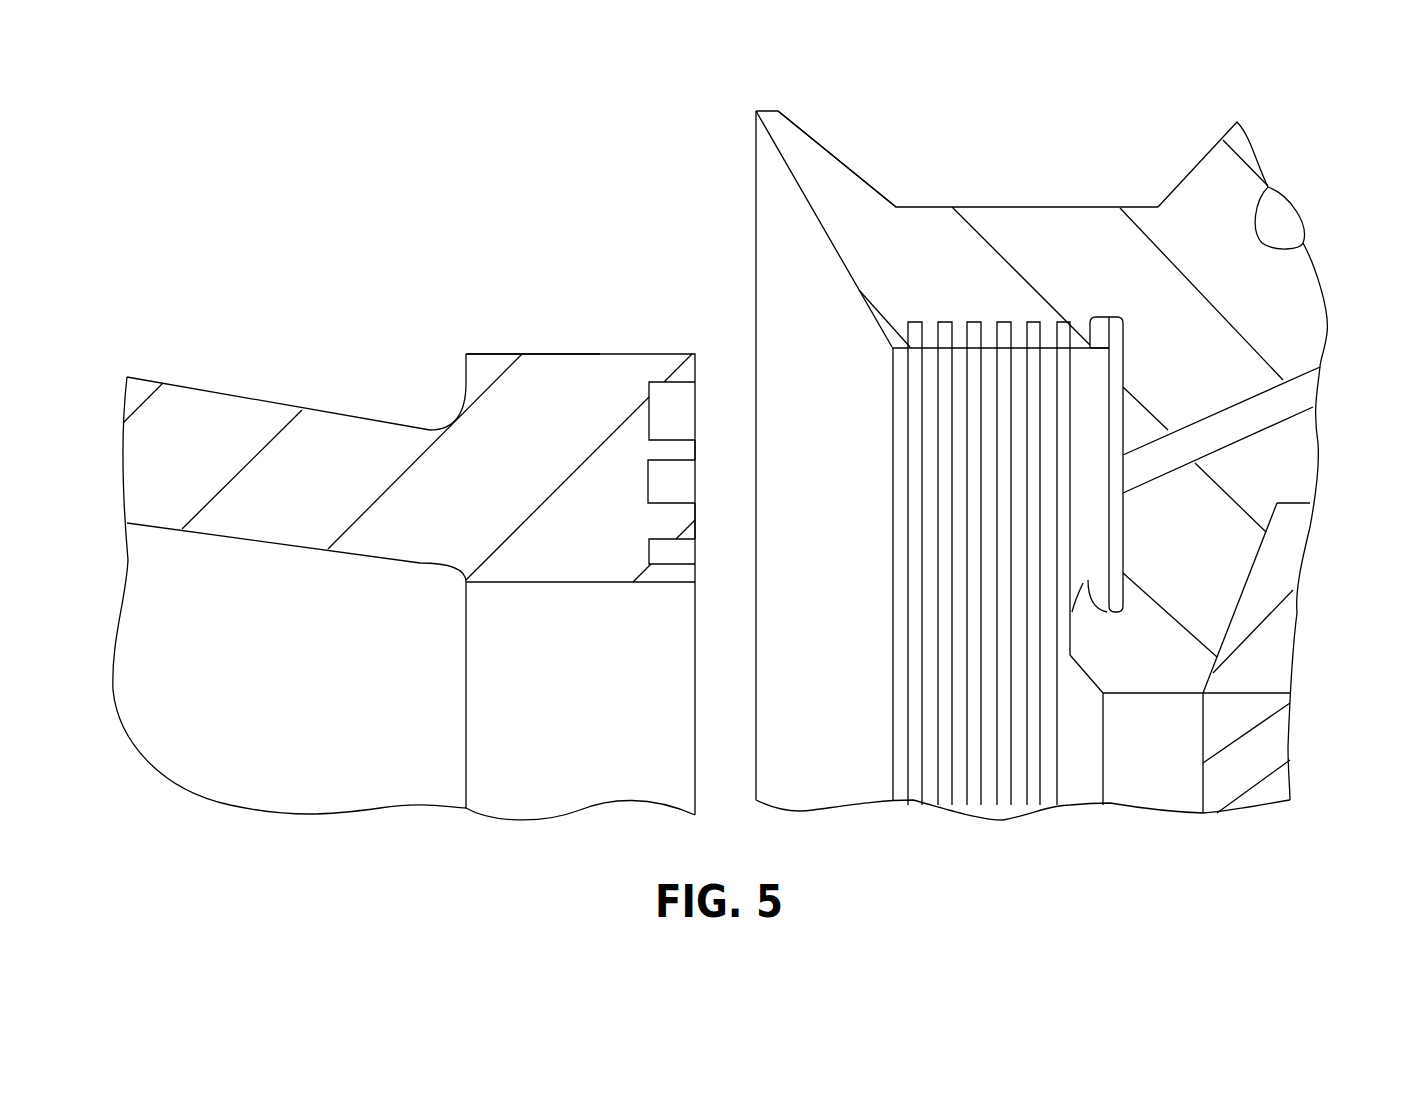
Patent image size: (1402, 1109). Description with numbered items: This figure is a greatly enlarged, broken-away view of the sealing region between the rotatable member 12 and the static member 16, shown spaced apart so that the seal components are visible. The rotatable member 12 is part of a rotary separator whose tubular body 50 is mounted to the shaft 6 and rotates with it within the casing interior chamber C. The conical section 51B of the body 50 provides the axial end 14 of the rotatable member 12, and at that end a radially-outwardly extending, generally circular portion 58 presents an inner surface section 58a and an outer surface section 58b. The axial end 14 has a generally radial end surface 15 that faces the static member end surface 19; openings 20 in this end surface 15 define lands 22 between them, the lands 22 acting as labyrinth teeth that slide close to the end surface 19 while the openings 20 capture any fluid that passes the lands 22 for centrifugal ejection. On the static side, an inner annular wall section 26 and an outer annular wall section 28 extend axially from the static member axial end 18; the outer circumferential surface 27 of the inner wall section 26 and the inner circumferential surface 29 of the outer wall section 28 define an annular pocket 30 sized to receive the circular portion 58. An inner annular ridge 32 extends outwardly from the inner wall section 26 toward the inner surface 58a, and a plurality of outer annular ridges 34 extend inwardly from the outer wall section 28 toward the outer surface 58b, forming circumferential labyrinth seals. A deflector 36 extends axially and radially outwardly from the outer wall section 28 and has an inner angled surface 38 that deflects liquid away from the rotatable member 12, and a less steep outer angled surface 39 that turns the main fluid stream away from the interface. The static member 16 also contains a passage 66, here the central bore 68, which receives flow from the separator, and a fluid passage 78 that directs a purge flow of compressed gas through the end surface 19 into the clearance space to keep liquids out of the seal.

The rotatable member 12 is at (396, 240).
The axial end 14 is at (577, 565).
The radial end surface 15 is at (695, 561).
The static member 16 is at (973, 125).
The axial end 18 is at (1180, 215).
The end surface 19 is at (1120, 510).
The openings 20 is at (663, 420).
The lands 22 is at (683, 453).
The inner annular wall section 26 is at (1058, 615).
The outer circumferential surface 27 is at (1088, 580).
The outer annular wall section 28 is at (982, 250).
The inner circumferential surface 29 is at (961, 350).
The annular pocket 30 is at (1087, 460).
The inner annular ridge 32 is at (1087, 590).
The outer annular ridges 34 is at (934, 340).
The deflector 36 is at (762, 157).
The angled surface 38 is at (830, 240).
The outer angled surface 39 is at (837, 157).
The tubular body 50 is at (197, 358).
The conical section 51B is at (238, 427).
The circular portion 58 is at (588, 390).
The inner surface section 58a is at (517, 585).
The outer surface section 58b is at (543, 353).
The passage 66 is at (1116, 795).
The central bore 68 is at (1158, 694).
The fluid passage 78 is at (1243, 417).
The shaft 6 is at (712, 333).
The interior chamber C is at (590, 190).